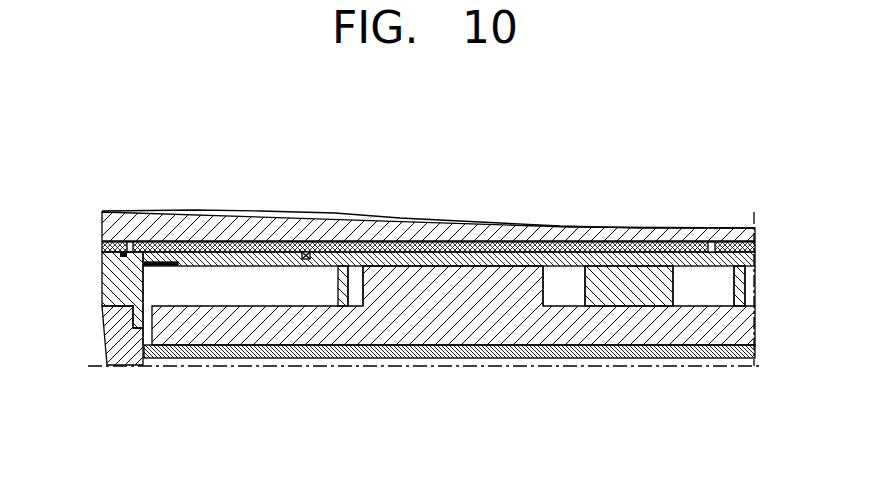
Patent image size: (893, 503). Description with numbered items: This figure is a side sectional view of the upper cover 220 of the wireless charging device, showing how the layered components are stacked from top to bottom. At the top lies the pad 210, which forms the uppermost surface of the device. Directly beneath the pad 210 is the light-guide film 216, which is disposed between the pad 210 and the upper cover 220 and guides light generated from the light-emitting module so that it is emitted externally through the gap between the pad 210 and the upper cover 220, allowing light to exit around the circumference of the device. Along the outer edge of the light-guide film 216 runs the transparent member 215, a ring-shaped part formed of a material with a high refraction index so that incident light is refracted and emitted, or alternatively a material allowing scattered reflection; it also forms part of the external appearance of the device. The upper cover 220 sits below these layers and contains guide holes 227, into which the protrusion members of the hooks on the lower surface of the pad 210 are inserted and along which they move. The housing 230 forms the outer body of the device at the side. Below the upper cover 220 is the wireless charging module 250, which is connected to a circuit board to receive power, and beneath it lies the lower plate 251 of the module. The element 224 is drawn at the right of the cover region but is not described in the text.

The pad 210 is at (102, 225).
The transparent member 215 is at (103, 249).
The light-guide film 216 is at (227, 250).
The guide hole 227 is at (306, 252).
The electrode pad 224 is at (737, 245).
The upper cover 220 is at (102, 283).
The housing 230 is at (105, 340).
The wireless charging module 250 is at (502, 330).
The bottom plate 251 is at (412, 353).